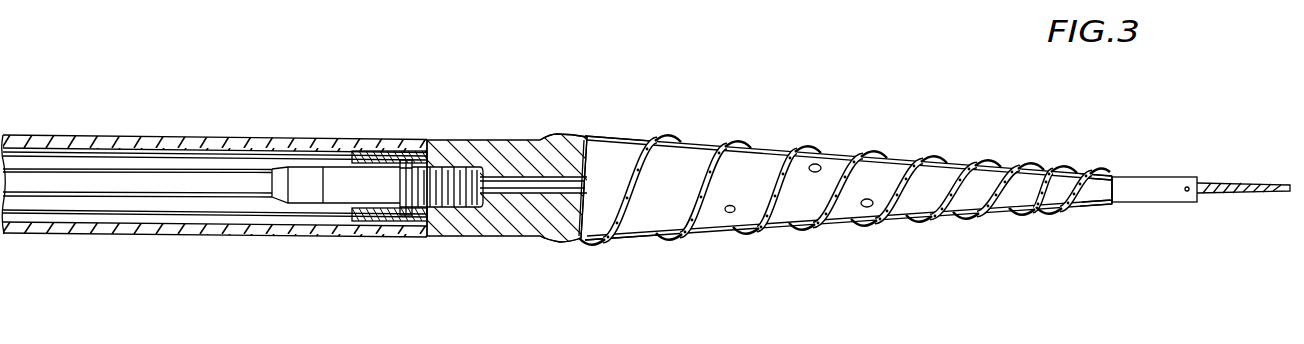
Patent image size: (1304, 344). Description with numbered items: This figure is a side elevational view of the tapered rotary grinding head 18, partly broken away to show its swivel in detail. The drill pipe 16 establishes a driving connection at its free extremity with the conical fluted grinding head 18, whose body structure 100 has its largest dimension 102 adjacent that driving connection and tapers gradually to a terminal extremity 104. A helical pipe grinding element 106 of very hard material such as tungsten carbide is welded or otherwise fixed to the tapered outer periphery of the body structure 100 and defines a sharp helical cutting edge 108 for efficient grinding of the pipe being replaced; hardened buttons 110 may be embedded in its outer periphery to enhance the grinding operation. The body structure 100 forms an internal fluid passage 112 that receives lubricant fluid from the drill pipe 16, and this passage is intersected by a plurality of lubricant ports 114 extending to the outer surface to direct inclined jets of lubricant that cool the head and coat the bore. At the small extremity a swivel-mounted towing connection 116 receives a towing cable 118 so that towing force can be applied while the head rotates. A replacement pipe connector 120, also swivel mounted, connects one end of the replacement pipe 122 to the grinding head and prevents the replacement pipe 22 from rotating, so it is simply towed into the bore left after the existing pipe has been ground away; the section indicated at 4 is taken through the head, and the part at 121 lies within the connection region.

The section line 4- 4 is at (800, 78).
The drill pipe 16 is at (79, 186).
The grinding head 18 is at (622, 95).
The replacement pipe 22 is at (397, 242).
The body structure 100 is at (692, 165).
The largest dimension 102 is at (562, 135).
The terminal extremity 104 is at (1095, 185).
The helical pipe grinding element 106 is at (865, 150).
The helical cutting edge 108 is at (633, 207).
The hardened buttons 110 is at (664, 138).
The internal fluid passage 112 is at (485, 140).
The lubricant ports 114 is at (729, 214).
The towing connection 116 is at (1150, 176).
The towing cable 118 is at (1272, 196).
The replacement pipe connector 120 is at (404, 160).
The rod 121 is at (340, 193).
The replacement pipe 122 is at (190, 141).